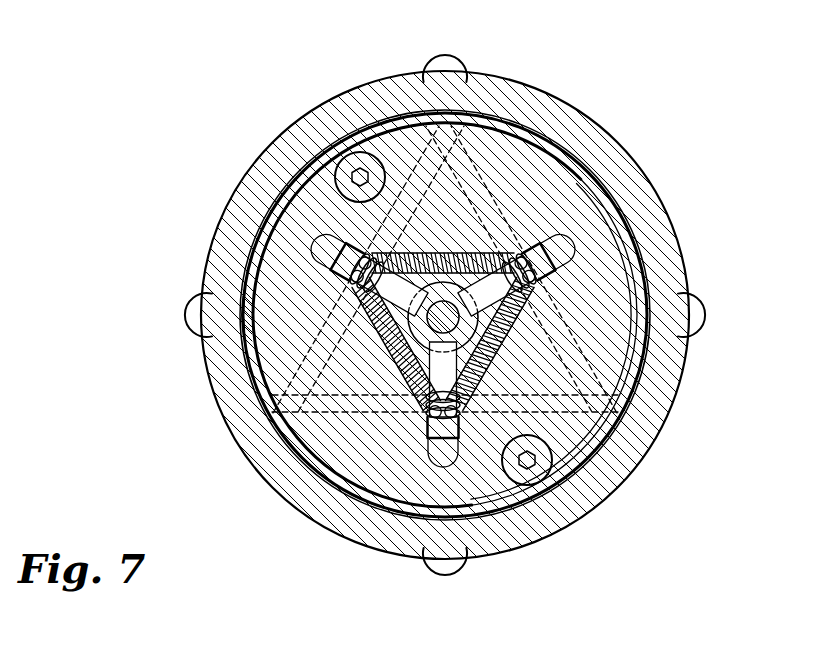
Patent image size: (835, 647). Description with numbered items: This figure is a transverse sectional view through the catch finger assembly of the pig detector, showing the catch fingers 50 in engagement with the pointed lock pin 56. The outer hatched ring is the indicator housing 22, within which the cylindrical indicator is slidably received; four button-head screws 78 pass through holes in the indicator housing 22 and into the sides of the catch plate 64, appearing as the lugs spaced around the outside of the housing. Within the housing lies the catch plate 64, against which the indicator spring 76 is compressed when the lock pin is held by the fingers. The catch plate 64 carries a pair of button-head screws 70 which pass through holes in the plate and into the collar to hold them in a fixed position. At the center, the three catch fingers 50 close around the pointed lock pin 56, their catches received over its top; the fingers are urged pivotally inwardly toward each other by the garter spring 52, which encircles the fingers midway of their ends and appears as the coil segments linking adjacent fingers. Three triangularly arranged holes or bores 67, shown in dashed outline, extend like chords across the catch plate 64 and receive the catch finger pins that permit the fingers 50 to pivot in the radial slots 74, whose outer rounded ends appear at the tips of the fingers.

The indicator housing 22 is at (667, 257).
The catch fingers 50 is at (528, 245).
The garter spring 52 is at (449, 252).
The pointed lock pin 56 is at (469, 335).
The catch plate 64 is at (574, 207).
The holes or bores 67 is at (307, 366).
The button-head screws 70 is at (342, 159).
The radial slots 74 is at (327, 250).
The indicator spring 76 is at (290, 424).
The button-head screws 78 is at (457, 63).